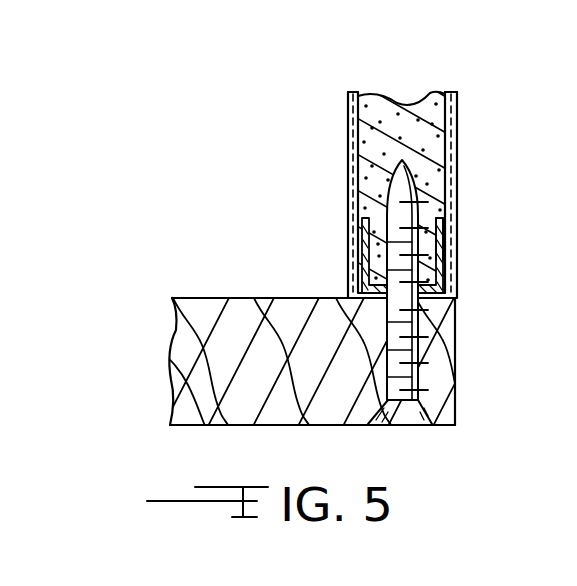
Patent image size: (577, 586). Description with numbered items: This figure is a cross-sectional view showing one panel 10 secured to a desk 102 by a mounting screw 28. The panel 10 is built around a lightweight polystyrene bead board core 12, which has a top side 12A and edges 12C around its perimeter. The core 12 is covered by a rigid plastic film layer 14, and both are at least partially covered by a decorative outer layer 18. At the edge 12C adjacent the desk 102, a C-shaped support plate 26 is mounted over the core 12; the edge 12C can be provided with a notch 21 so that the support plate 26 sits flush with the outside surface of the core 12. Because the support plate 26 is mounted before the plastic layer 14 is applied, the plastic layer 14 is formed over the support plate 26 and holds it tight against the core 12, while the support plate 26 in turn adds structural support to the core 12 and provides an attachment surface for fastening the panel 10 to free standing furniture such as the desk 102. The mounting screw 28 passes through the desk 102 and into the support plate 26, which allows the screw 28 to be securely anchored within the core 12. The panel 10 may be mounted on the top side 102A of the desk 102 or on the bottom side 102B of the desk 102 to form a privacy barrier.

The panel 10 is at (350, 147).
The bead board core 12 is at (425, 110).
The top side 12A is at (347, 113).
The edges 12C is at (455, 330).
The rigid plastic film layer 14 is at (456, 104).
The decorative outer layer 18 is at (458, 143).
The notch 21 is at (444, 223).
The support plate 26 is at (443, 285).
The mounting screw 28 is at (399, 414).
The desk 102 is at (187, 402).
The top side of the desk 102A is at (279, 298).
The bottom side of the desk 102B is at (308, 427).